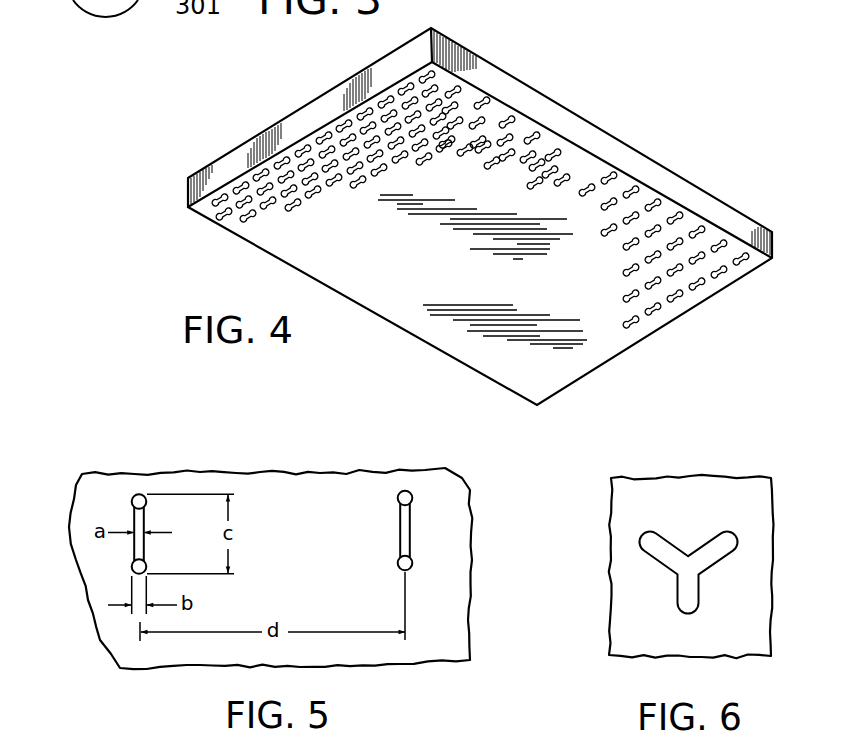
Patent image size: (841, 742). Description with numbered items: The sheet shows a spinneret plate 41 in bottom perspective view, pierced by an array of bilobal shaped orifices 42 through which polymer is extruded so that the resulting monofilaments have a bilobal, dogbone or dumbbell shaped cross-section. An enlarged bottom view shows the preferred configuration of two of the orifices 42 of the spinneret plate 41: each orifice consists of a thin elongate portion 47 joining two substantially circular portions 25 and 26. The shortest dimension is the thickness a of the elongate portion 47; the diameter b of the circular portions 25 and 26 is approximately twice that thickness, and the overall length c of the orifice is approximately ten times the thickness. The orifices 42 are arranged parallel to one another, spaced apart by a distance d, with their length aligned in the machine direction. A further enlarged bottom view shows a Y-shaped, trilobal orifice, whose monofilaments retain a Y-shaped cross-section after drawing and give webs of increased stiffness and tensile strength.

In FIG. 4, the spinneret plate 41 is at (624, 104).
In FIG. 4, the bilobal shaped orifices 42 is at (656, 212).
In FIG. 5, the substantially circular portion 25 is at (138, 494).
In FIG. 5, the slit connecting openings 47 is at (136, 546).
In FIG. 5, the substantially circular portion 26 is at (134, 569).